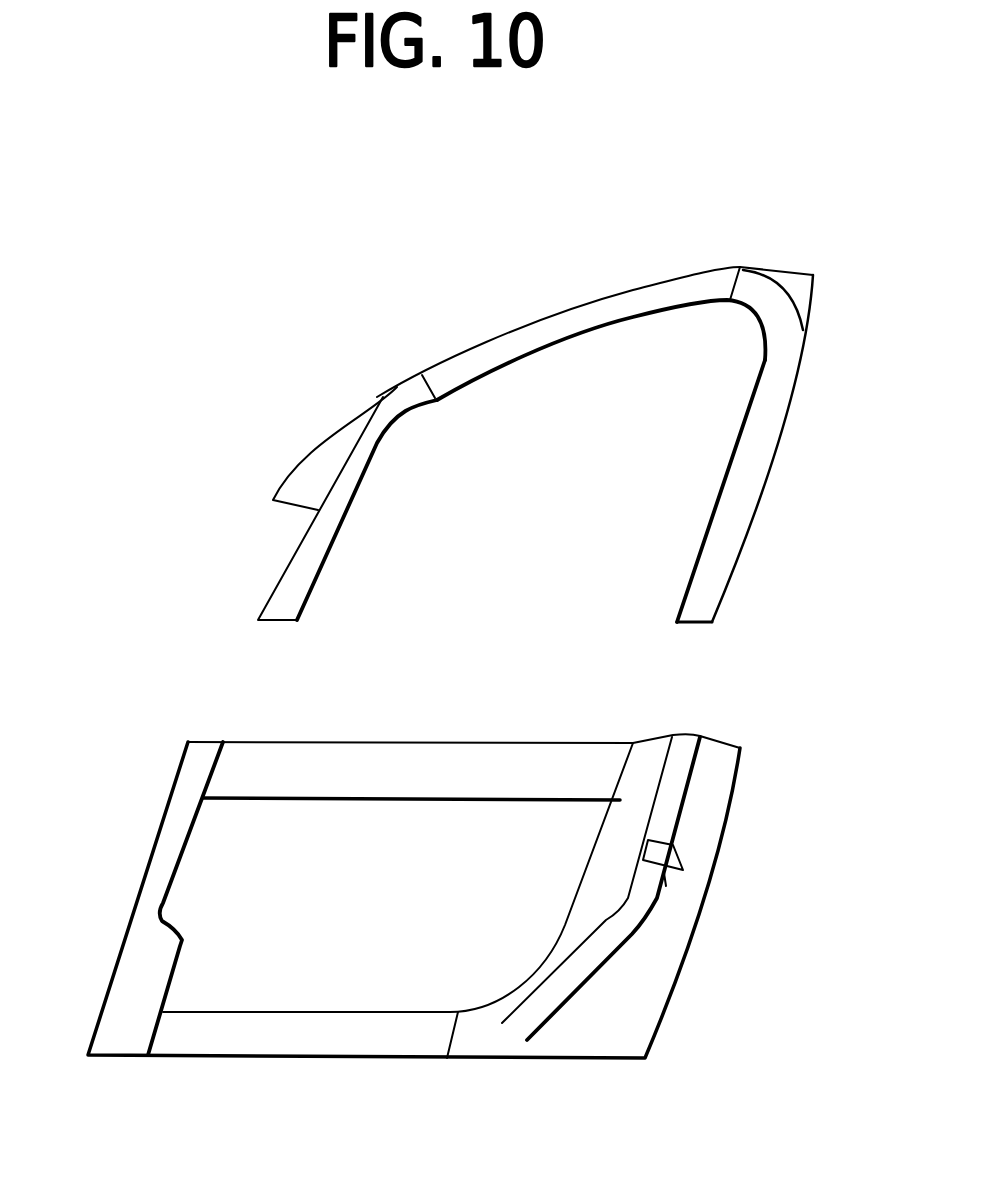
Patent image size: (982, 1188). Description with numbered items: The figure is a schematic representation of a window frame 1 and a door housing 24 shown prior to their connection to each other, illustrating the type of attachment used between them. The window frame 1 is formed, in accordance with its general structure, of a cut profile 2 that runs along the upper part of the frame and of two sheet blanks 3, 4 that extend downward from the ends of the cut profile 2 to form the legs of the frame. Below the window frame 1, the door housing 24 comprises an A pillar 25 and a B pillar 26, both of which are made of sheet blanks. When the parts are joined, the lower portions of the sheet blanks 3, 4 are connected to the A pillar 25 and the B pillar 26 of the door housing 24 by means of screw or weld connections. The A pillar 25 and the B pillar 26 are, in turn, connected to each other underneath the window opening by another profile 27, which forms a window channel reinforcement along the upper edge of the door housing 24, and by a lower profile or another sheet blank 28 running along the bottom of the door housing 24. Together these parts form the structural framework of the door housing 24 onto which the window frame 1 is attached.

The window frame 1 is at (507, 373).
The cut profile 2 is at (460, 335).
The sheet blank 3 is at (713, 570).
The sheet blank 4 is at (297, 565).
The door housing 24 is at (463, 900).
The A pillar 25 is at (168, 822).
The B pillar 26 is at (620, 863).
The profile forming a window channel reinforcement 27 is at (388, 763).
The lower profile or sheet blank 28 is at (315, 1033).